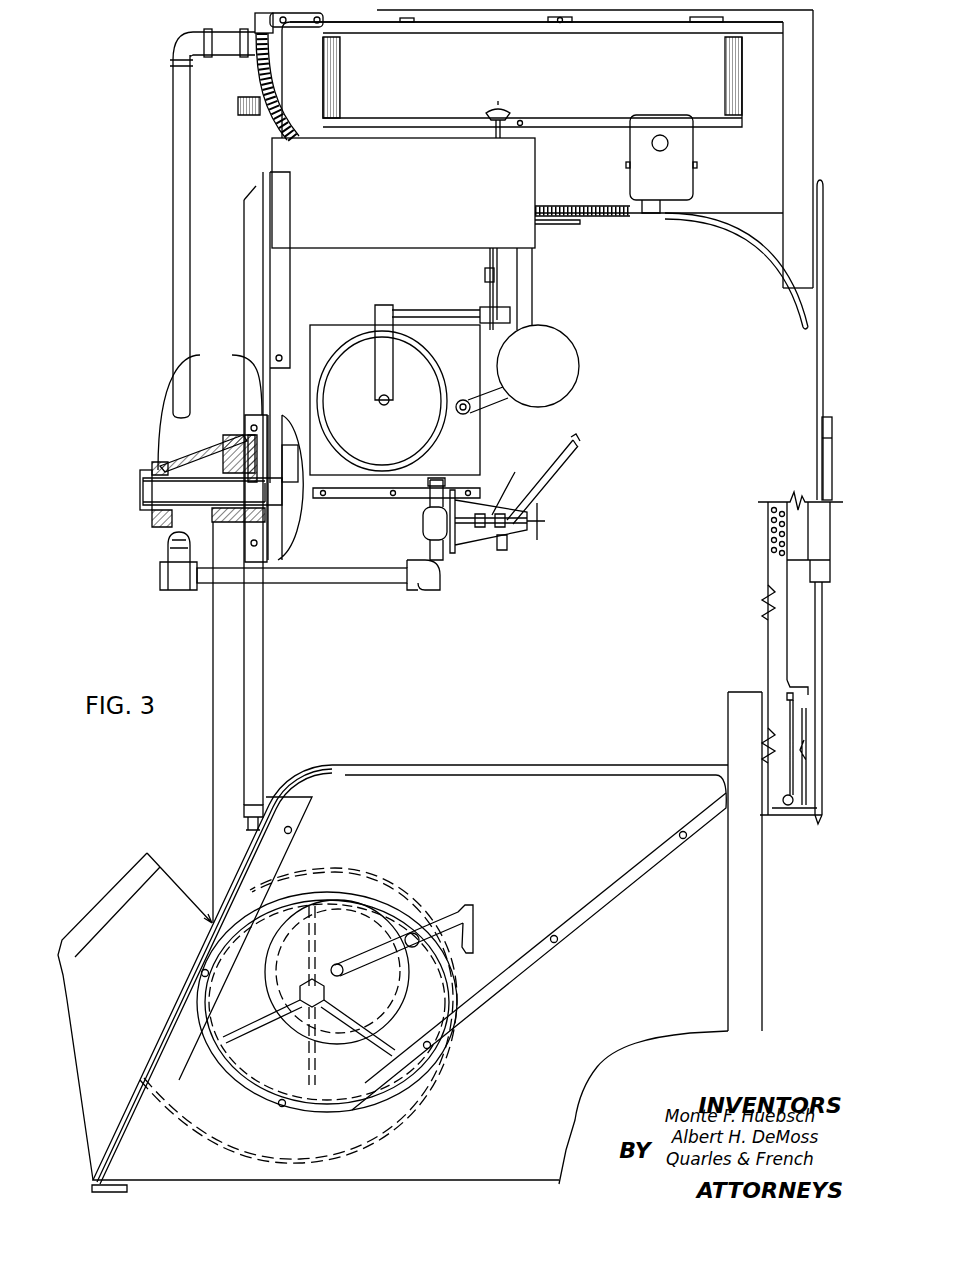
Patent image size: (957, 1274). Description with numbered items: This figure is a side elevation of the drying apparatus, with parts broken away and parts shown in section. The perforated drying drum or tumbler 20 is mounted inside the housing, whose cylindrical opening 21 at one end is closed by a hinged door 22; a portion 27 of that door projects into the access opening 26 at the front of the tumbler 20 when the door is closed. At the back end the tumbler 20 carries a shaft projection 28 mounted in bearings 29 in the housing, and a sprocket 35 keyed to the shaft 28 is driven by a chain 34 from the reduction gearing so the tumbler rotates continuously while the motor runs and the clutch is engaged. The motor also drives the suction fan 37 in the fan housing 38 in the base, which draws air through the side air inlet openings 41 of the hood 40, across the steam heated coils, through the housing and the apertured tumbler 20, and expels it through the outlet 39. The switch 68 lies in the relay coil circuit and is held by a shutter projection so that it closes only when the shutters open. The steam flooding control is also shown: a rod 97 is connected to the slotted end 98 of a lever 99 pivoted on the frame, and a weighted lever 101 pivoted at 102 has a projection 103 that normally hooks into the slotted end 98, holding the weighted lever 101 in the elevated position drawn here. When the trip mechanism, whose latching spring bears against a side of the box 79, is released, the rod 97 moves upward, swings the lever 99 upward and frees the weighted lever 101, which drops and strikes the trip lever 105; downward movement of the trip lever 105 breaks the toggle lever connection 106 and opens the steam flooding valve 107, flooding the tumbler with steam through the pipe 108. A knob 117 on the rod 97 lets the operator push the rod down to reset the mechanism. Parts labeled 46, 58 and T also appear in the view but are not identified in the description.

The switch 68 is at (304, 28).
The cover 46 is at (618, 14).
The side air inlet opening 41 is at (733, 72).
The knob 117 is at (500, 108).
The box 79 is at (537, 163).
The timer T is at (695, 160).
The hood 40 is at (763, 203).
The conduit arc 58 is at (805, 302).
The rod 97 is at (493, 254).
The lever 99 is at (490, 288).
The slotted end 98 is at (490, 305).
The projection 103 is at (492, 340).
The weighted lever 101 is at (567, 355).
The pivot 102 is at (470, 410).
The bearings 29 is at (210, 405).
The sprocket 35 is at (245, 437).
The shaft projection 28 is at (198, 483).
The tumbler 20 is at (290, 528).
The toggle lever connection 106 is at (517, 476).
The trip lever 105 is at (553, 467).
The steam flooding valve 107 is at (432, 525).
The pipe 108 is at (355, 572).
The chain 34 is at (225, 553).
The door 22 is at (793, 580).
The door portion 27 is at (787, 622).
The cylindrical opening 21 is at (790, 695).
The access opening 26 is at (787, 708).
The suction fan 37 is at (297, 890).
The fan housing 38 is at (365, 890).
The outlet 39 is at (108, 900).